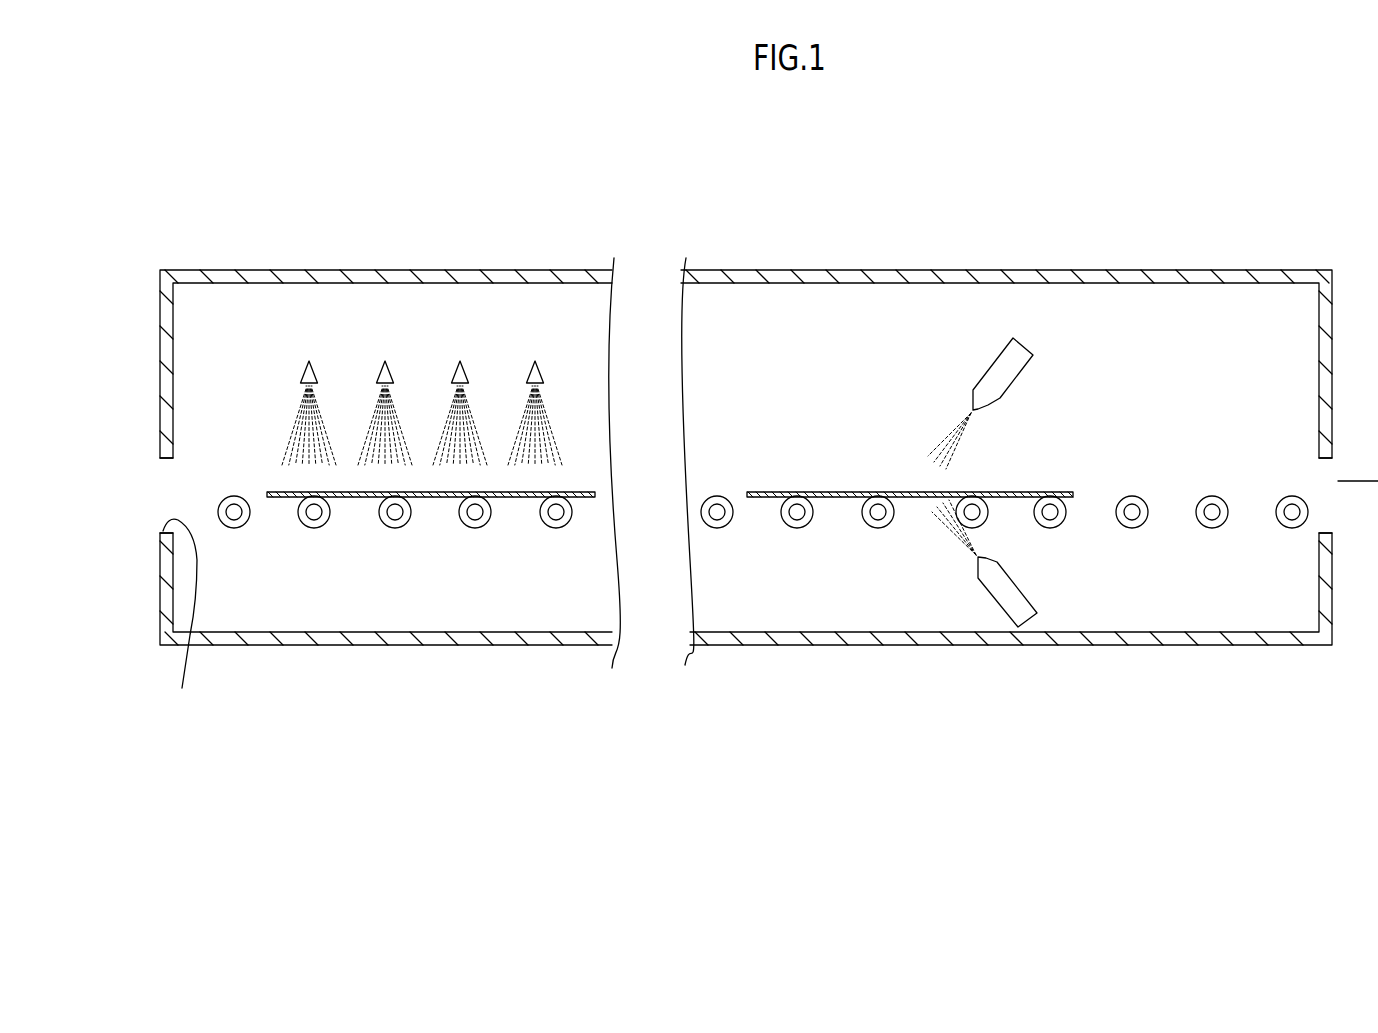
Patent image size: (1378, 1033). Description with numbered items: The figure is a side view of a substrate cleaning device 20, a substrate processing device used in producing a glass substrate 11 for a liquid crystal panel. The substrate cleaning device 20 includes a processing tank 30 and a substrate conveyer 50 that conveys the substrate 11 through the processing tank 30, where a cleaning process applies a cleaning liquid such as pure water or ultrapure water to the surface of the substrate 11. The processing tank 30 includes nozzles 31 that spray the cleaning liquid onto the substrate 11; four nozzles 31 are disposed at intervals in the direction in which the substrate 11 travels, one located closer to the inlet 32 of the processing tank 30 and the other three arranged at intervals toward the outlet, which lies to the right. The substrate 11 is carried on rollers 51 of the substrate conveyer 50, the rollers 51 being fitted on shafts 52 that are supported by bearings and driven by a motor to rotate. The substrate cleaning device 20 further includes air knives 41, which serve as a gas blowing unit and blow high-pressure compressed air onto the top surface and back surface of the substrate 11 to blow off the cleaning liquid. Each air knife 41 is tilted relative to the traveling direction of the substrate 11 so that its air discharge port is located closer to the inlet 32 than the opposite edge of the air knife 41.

The substrate 11 is at (510, 498).
The substrate cleaning device 20 is at (247, 252).
The processing tank 30 is at (767, 277).
The nozzle 31 is at (388, 374).
The inlet 32 is at (180, 619).
The air knife 41 is at (1018, 355).
The substrate conveyer 50 is at (869, 618).
The roller 51 is at (793, 527).
The shaft 52 is at (803, 520).